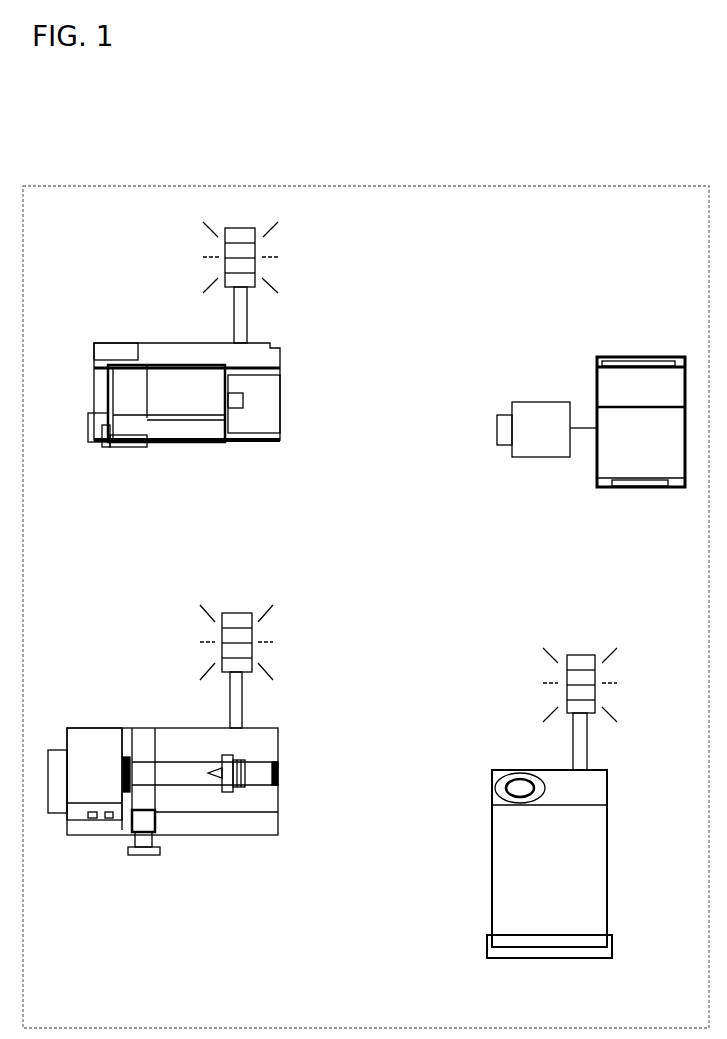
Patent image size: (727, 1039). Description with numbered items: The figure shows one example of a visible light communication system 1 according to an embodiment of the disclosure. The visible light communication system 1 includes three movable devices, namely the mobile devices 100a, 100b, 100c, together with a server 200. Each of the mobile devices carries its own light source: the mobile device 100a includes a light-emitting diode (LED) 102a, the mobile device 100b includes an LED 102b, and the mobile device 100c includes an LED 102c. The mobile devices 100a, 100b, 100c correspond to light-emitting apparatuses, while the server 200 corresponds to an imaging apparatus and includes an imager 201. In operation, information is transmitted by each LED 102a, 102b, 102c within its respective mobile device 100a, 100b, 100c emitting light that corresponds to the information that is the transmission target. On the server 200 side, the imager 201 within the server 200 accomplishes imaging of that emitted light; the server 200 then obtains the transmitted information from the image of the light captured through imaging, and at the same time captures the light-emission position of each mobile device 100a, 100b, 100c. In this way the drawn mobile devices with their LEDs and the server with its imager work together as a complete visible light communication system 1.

The visible light communication system 1 is at (468, 160).
The mobile device 100a is at (120, 343).
The mobile device 100b is at (107, 727).
The mobile device 100c is at (492, 835).
The light-emitting diode (LED) 102a is at (222, 260).
The LED 102b is at (212, 647).
The LED 102c is at (563, 697).
The server 200 is at (642, 357).
The imager 201 is at (540, 400).